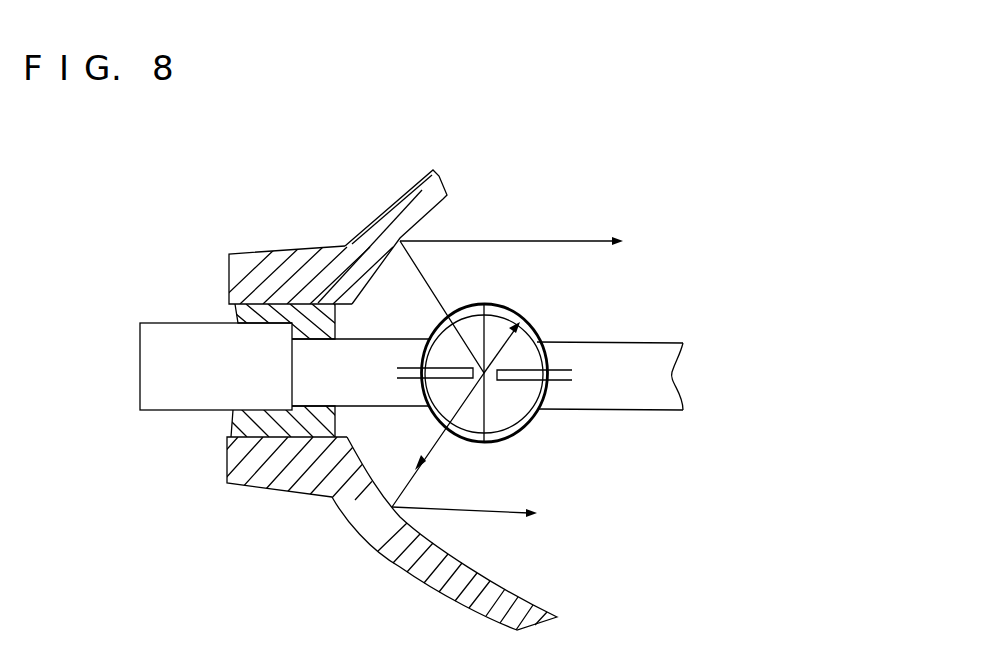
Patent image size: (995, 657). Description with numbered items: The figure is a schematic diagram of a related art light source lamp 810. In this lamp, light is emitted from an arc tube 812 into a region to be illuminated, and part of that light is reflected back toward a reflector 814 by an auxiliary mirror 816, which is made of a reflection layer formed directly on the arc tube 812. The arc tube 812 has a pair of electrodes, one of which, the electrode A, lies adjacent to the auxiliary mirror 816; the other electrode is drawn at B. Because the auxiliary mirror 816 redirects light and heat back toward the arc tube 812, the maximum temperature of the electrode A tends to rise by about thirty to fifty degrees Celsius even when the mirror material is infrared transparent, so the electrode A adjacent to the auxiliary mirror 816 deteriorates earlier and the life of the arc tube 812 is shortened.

The light source lamp 810 is at (658, 200).
The arc tube 812 is at (465, 440).
The reflector 814 is at (367, 232).
The auxiliary mirror 816 is at (500, 300).
The electrode A is at (518, 383).
The mirror surface B is at (457, 380).